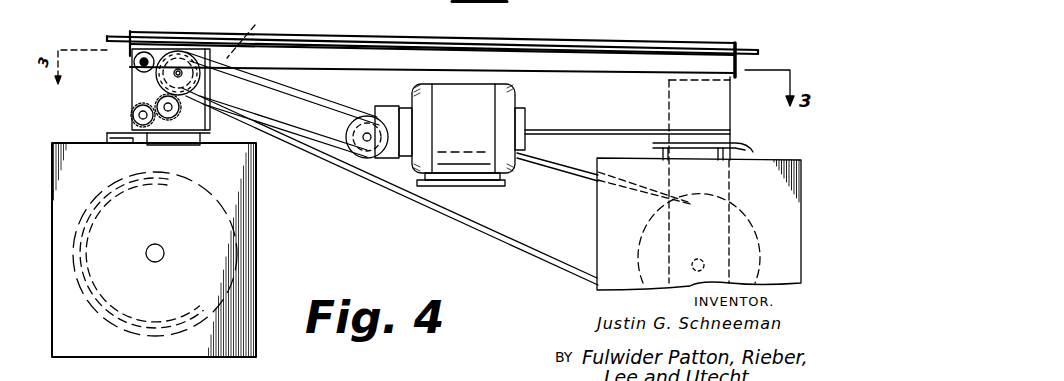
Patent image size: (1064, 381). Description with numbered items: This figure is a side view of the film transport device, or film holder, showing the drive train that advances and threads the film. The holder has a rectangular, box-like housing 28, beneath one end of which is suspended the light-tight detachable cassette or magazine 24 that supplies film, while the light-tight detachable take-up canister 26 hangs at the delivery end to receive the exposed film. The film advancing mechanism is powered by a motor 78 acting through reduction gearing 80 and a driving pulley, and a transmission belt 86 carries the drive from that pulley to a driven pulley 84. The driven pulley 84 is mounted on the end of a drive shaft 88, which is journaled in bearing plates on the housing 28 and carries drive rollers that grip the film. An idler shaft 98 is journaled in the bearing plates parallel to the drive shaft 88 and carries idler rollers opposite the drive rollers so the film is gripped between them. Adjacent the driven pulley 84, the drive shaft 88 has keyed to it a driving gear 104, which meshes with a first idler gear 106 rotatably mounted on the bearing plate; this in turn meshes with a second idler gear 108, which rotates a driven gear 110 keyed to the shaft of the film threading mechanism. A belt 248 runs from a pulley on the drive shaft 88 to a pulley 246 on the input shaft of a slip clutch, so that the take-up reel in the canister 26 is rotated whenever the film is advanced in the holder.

The detachable cassette or magazine 24 is at (122, 352).
The take-up canister 26 is at (771, 162).
The housing 28 is at (130, 89).
The motor 78 is at (472, 134).
The reduction gearing 80 is at (382, 100).
The driven pulley 84 is at (181, 70).
The transmission belt 86 is at (320, 150).
The drive shaft 88 is at (182, 68).
The idler shaft 98 is at (137, 68).
The driving gear 104 is at (259, 36).
The first idler gear 106 is at (207, 100).
The second idler gear 108 is at (177, 77).
The driven gear 110 is at (131, 114).
The pulley 246 is at (662, 215).
The belt 248 is at (516, 254).